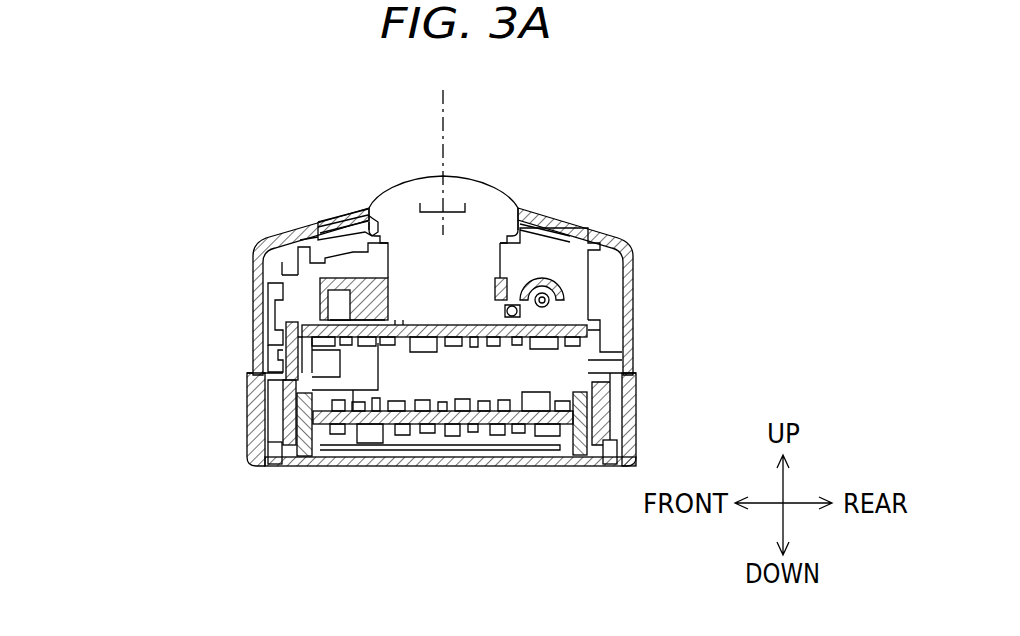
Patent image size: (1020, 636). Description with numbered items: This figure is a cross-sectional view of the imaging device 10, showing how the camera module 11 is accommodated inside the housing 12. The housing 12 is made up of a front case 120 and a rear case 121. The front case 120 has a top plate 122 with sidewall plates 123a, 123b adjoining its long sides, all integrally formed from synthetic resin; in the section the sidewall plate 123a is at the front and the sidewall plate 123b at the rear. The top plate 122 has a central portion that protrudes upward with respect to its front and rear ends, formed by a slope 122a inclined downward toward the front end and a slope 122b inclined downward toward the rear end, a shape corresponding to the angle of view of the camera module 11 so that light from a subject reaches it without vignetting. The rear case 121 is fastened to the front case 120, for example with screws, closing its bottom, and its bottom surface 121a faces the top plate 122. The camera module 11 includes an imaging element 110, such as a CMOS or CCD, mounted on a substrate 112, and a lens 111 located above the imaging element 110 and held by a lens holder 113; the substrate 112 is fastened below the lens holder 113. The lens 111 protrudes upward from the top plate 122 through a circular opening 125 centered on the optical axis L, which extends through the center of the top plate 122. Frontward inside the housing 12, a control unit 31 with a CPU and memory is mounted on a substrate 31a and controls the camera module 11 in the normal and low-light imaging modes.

The imaging device 10 is at (208, 427).
The camera module 11 is at (627, 177).
The housing 12 is at (257, 500).
The control unit 31 is at (277, 343).
The substrate 31a is at (267, 357).
The imaging element 110 is at (437, 322).
The lens 111 is at (470, 188).
The substrate 112 is at (575, 325).
The lens holder 113 is at (545, 288).
The front case 120 is at (255, 247).
The rear case 121 is at (635, 403).
The bottom surface 121a is at (443, 465).
The top plate 122 is at (309, 238).
The slope 122a is at (297, 223).
The slope 122b is at (587, 213).
The sidewall plate 123a is at (252, 312).
The sidewall plate 123b is at (637, 333).
The opening 125 is at (353, 217).
The optical axis L is at (445, 122).